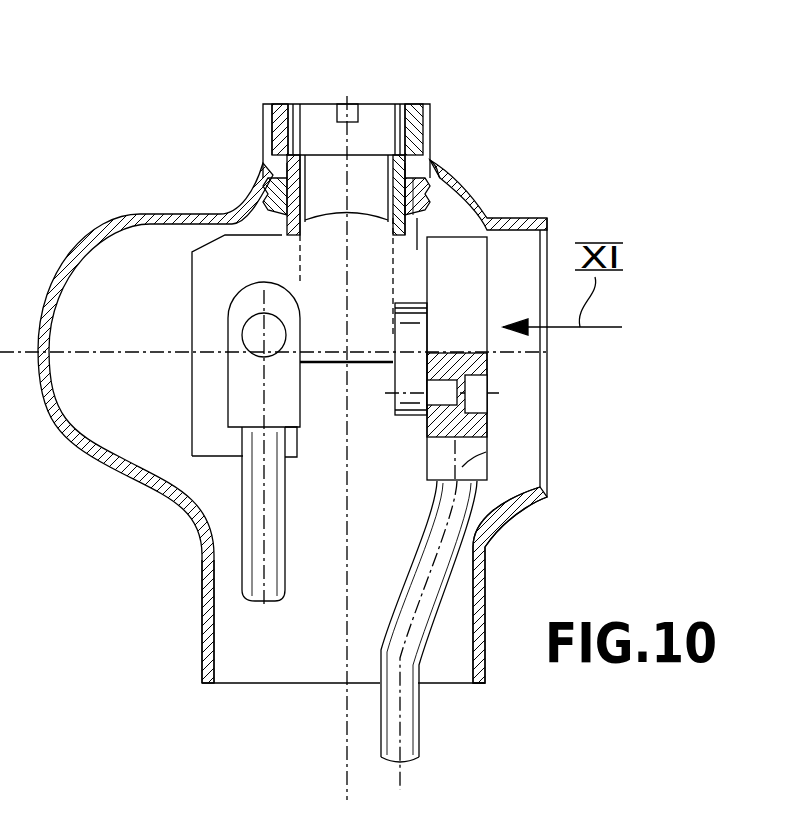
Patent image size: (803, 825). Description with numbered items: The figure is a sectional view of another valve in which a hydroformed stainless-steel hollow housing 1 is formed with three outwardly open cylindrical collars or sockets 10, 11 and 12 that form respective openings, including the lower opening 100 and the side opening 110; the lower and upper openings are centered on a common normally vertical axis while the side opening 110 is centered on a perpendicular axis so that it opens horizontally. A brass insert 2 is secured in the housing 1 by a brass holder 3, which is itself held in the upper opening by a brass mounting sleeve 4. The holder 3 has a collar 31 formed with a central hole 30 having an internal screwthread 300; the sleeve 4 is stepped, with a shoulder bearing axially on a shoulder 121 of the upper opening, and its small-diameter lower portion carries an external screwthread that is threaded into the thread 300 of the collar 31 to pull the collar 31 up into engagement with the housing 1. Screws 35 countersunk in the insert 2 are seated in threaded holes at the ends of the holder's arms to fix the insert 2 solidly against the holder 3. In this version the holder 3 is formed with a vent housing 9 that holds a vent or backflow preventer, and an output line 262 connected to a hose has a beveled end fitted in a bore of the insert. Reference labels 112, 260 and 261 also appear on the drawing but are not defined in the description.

The hollow housing 1 is at (490, 552).
The brass insert 2 is at (457, 452).
The brass holder 3 is at (427, 222).
The brass mounting sleeve 4 is at (381, 130).
The vent housing 9 is at (207, 280).
The cylindrical collar 10 is at (205, 596).
The cylindrical collar 11 is at (523, 222).
The cylindrical collar 12 is at (437, 160).
The central hole 30 is at (267, 197).
The collar 31 is at (440, 192).
The screws 35 is at (490, 428).
The lower opening 100 is at (242, 645).
The side opening 110 is at (525, 400).
The cap neck 112 is at (277, 165).
The shoulder 121 is at (422, 185).
The pipe 260 is at (413, 745).
The pipe inner wall 261 is at (413, 745).
The output line 262 is at (253, 537).
The internal screwthread 300 is at (341, 129).